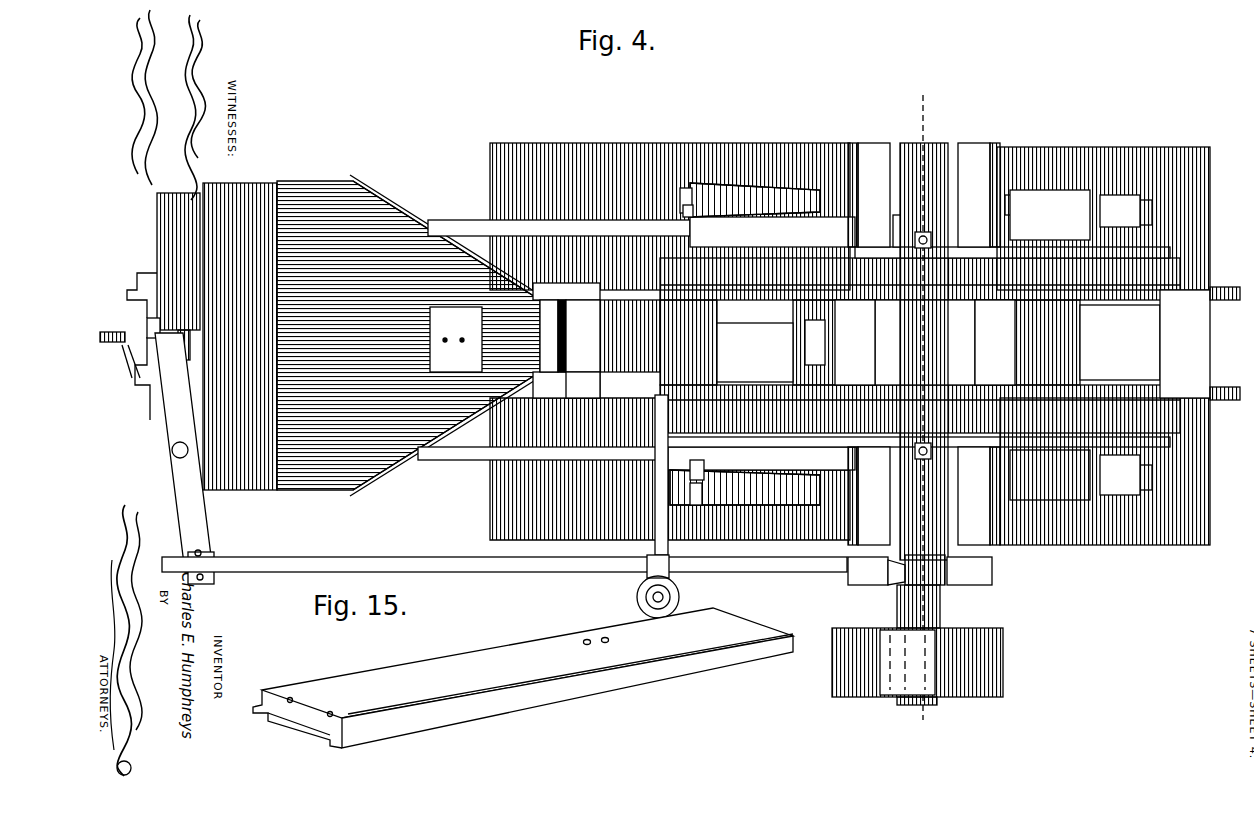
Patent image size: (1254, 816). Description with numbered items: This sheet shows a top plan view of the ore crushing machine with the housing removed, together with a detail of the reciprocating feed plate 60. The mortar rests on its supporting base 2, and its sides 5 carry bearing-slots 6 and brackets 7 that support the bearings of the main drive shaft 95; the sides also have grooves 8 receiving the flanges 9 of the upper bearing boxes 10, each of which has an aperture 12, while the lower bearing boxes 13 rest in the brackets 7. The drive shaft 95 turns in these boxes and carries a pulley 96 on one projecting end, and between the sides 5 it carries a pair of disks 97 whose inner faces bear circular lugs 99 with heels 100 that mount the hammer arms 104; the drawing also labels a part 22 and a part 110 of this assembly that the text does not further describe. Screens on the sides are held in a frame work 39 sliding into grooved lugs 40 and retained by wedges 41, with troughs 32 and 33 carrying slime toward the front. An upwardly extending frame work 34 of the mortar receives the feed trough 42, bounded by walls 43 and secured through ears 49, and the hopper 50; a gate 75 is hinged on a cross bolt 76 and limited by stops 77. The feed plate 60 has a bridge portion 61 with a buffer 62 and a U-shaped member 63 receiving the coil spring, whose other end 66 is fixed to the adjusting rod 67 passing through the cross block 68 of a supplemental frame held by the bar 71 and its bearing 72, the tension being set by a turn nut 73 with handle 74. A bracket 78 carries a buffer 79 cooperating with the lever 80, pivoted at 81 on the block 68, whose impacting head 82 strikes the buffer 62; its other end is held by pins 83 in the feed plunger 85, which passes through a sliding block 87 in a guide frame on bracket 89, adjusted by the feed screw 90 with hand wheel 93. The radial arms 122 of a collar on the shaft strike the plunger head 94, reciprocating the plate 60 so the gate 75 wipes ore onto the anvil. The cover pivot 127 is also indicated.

In FIG. 4, the supporting base 2 is at (605, 155).
In FIG. 4, the sides of the mortar 5 is at (770, 200).
In FIG. 4, the bearing-slots 6 is at (945, 125).
In FIG. 4, the brackets 7 is at (853, 150).
In FIG. 4, the grooves or countersunk portions 8 is at (862, 250).
In FIG. 4, the flanges 9 is at (898, 231).
In FIG. 4, the upper bearing boxes 10 is at (946, 160).
In FIG. 4, the aperture 12 is at (925, 342).
In FIG. 4, the lower bearing boxes 13 is at (868, 150).
In FIG. 4, the clutch member 22 is at (860, 408).
In FIG. 4, the trough 32 is at (1100, 530).
In FIG. 4, the trough 33 is at (1103, 346).
In FIG. 4, the upwardly extending frame work 34 is at (606, 282).
In FIG. 4, the frame work 39 is at (761, 343).
In FIG. 4, the grooved lugs 40 is at (648, 482).
In FIG. 4, the wedges 41 is at (682, 195).
In FIG. 4, the feed trough 42 is at (408, 322).
In FIG. 4, the walls 43 is at (402, 205).
In FIG. 4, the ears 49 is at (538, 285).
In FIG. 4, the hopper 50 is at (248, 190).
In FIG. 15, the reciprocating feed plate 60 is at (527, 663).
In FIG. 15, the bridge portion 61 is at (418, 670).
In FIG. 15, the buffer 62 is at (278, 698).
In FIG. 15, the U-shaped member 63 is at (604, 637).
In FIG. 4, the end of the coil spring 66 is at (440, 339).
In FIG. 4, the adjusting rod 67 is at (106, 333).
In FIG. 4, the cross block 68 is at (168, 236).
In FIG. 4, the bar 71 is at (460, 222).
In FIG. 4, the bearing 72 is at (683, 210).
In FIG. 4, the turn nut 73 is at (128, 345).
In FIG. 4, the handle 74 is at (128, 360).
In FIG. 4, the gate 75 is at (579, 336).
In FIG. 4, the cross bolt 76 is at (578, 400).
In FIG. 4, the stops 77 is at (548, 322).
In FIG. 4, the bracket 78 is at (150, 295).
In FIG. 4, the buffer 79 is at (148, 325).
In FIG. 4, the lever 80 is at (168, 420).
In FIG. 4, the pivot 81 is at (172, 452).
In FIG. 4, the impacting head 82 is at (180, 345).
In FIG. 4, the pins 83 is at (205, 560).
In FIG. 4, the feed plunger 85 is at (380, 558).
In FIG. 4, the sliding block 87 is at (668, 565).
In FIG. 4, the bracket 89 is at (655, 510).
In FIG. 4, the feed screw 90 is at (663, 597).
In FIG. 4, the hand wheel 93 is at (640, 597).
In FIG. 4, the impacting head 94 is at (895, 578).
In FIG. 4, the main drive shaft 95 is at (940, 615).
In FIG. 4, the pulley 96 is at (1003, 662).
In FIG. 4, the disks 97 is at (920, 345).
In FIG. 4, the lugs 99 is at (745, 312).
In FIG. 4, the heels 100 is at (822, 342).
In FIG. 4, the arms 104 is at (949, 342).
In FIG. 4, the bearing block 110 is at (1054, 522).
In FIG. 4, the radial arms 122 is at (850, 582).
In FIG. 4, the pivot 127 is at (1228, 288).